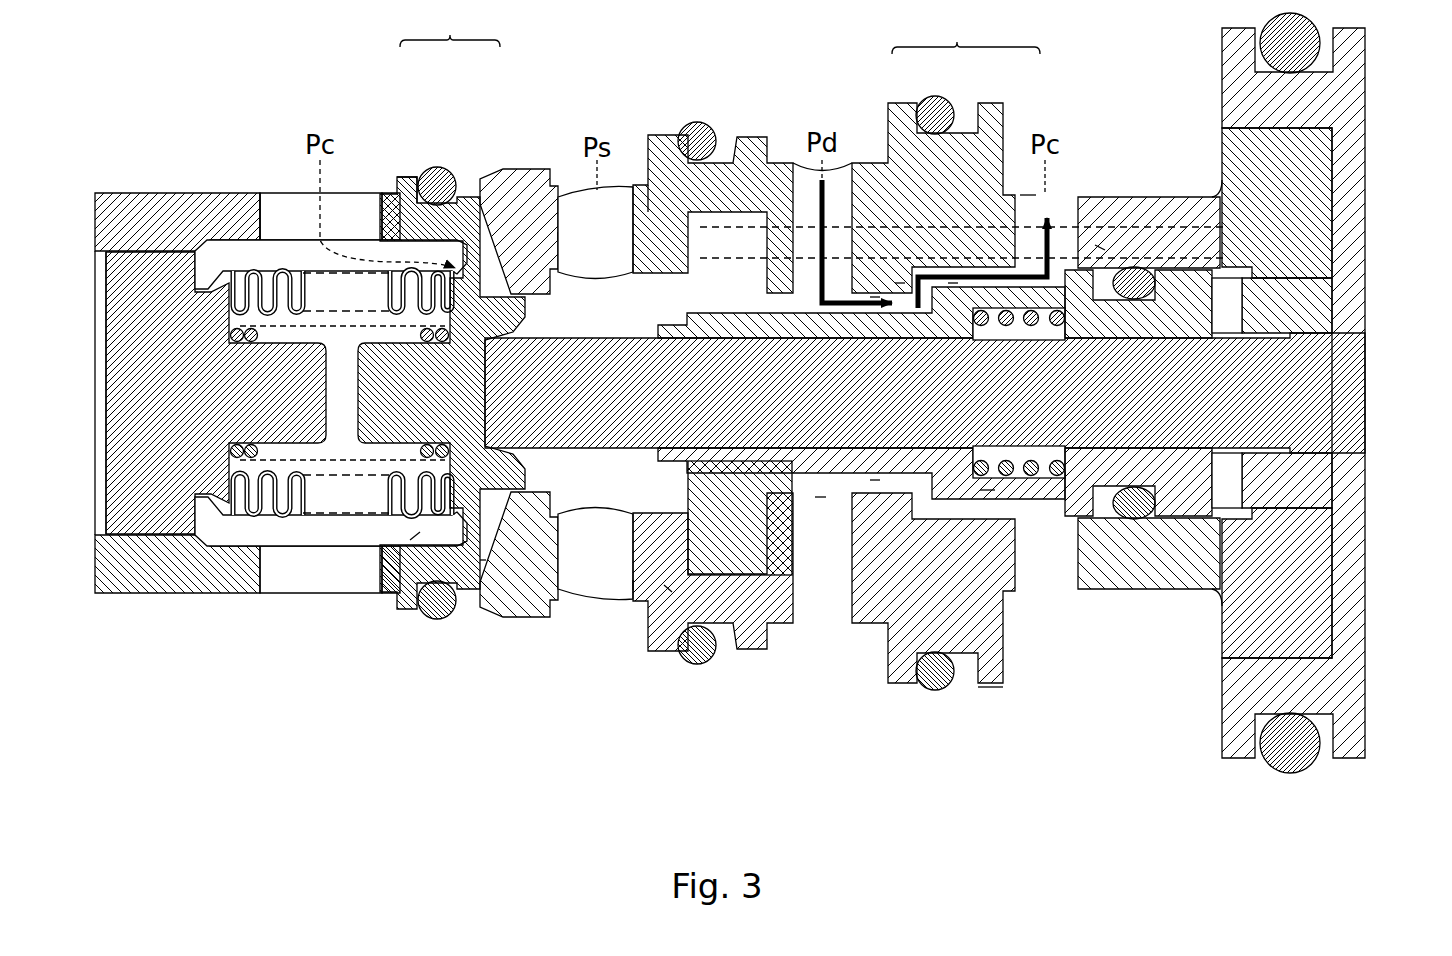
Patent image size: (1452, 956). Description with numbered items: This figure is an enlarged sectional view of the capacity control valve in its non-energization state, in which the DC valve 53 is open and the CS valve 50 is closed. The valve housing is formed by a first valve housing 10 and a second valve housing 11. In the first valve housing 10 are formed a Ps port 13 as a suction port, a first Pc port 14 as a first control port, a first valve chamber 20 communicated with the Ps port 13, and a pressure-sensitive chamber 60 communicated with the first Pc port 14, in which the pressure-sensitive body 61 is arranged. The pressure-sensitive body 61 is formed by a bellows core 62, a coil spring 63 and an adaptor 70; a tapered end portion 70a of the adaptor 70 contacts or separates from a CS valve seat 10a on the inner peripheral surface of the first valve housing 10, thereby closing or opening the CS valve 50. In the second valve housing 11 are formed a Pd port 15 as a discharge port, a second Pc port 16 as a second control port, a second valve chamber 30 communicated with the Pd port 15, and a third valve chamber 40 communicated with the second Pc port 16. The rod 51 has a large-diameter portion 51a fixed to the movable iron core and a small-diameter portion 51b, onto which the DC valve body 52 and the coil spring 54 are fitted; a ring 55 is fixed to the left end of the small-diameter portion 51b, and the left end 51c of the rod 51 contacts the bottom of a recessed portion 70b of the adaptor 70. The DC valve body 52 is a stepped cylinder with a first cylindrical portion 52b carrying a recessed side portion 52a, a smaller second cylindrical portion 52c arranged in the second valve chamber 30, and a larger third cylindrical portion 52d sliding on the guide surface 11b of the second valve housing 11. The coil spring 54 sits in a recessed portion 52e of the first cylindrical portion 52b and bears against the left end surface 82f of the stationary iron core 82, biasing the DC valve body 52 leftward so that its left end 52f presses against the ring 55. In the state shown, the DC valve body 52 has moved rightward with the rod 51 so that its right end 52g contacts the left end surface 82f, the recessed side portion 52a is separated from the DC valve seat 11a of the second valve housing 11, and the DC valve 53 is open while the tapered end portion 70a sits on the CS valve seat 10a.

The first valve housing 10 is at (157, 186).
The first Pc port 14 is at (275, 212).
The pressure-sensitive chamber 60 is at (398, 262).
The CS valve 50 is at (450, 23).
The CS valve seat 10a is at (460, 240).
The tapered end portion 70a is at (500, 215).
The Ps port 13 is at (575, 205).
The first valve chamber 20 is at (622, 292).
The left end of the DC valve body 52f is at (660, 215).
The guide surface 11b is at (703, 300).
The Pd port 15 is at (803, 290).
The second valve chamber 30 is at (875, 297).
The DC valve 53 is at (966, 31).
The recessed side portion 52a is at (900, 283).
The DC valve body 52 is at (752, 500).
The DC valve seat 11a is at (953, 283).
The second Pc port 16 is at (1028, 195).
The third valve chamber 40 is at (1053, 278).
The left end surface of the stationary iron core 82f is at (1100, 245).
The right end of the DC valve body 52g is at (1136, 228).
The stationary iron core 82 is at (1338, 244).
The pressure-sensitive body 61 is at (272, 532).
The bellows core 62 is at (397, 505).
The coil spring 63 is at (415, 536).
The adaptor 70 is at (446, 530).
The left end of the rod 51c is at (500, 600).
The recessed portion 70b is at (487, 560).
The rod 51 is at (603, 470).
The ring 55 is at (635, 585).
The third cylindrical portion 52d is at (668, 585).
The second cylindrical portion 52c is at (820, 498).
The first cylindrical portion 52b is at (875, 480).
The second valve housing 11 is at (985, 700).
The recessed portion 52e is at (987, 492).
The coil spring 54 is at (1057, 457).
The small-diameter portion 51b is at (1203, 457).
The large-diameter portion 51a is at (1310, 662).